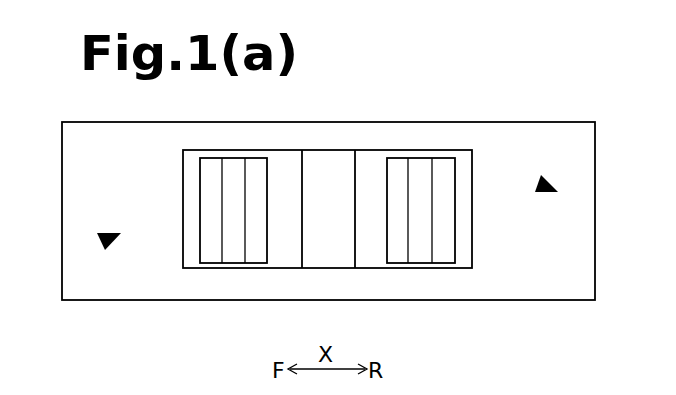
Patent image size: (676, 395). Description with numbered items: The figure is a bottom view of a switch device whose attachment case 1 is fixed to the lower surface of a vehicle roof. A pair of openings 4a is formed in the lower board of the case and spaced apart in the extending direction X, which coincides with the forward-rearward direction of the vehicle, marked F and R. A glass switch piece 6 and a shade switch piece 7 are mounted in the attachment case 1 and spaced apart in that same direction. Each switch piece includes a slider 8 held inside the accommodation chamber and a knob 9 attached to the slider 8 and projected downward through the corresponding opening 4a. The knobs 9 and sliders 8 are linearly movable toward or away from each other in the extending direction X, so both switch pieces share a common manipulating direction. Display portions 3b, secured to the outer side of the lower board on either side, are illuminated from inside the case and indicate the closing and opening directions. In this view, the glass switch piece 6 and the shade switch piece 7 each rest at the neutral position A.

The attachment case 1 is at (327, 300).
The display portion 3b is at (105, 252).
The opening 4a is at (183, 213).
The glass switch piece 6 is at (233, 246).
The shade switch piece 7 is at (421, 246).
The slider 8 is at (280, 163).
The knob 9 is at (232, 163).